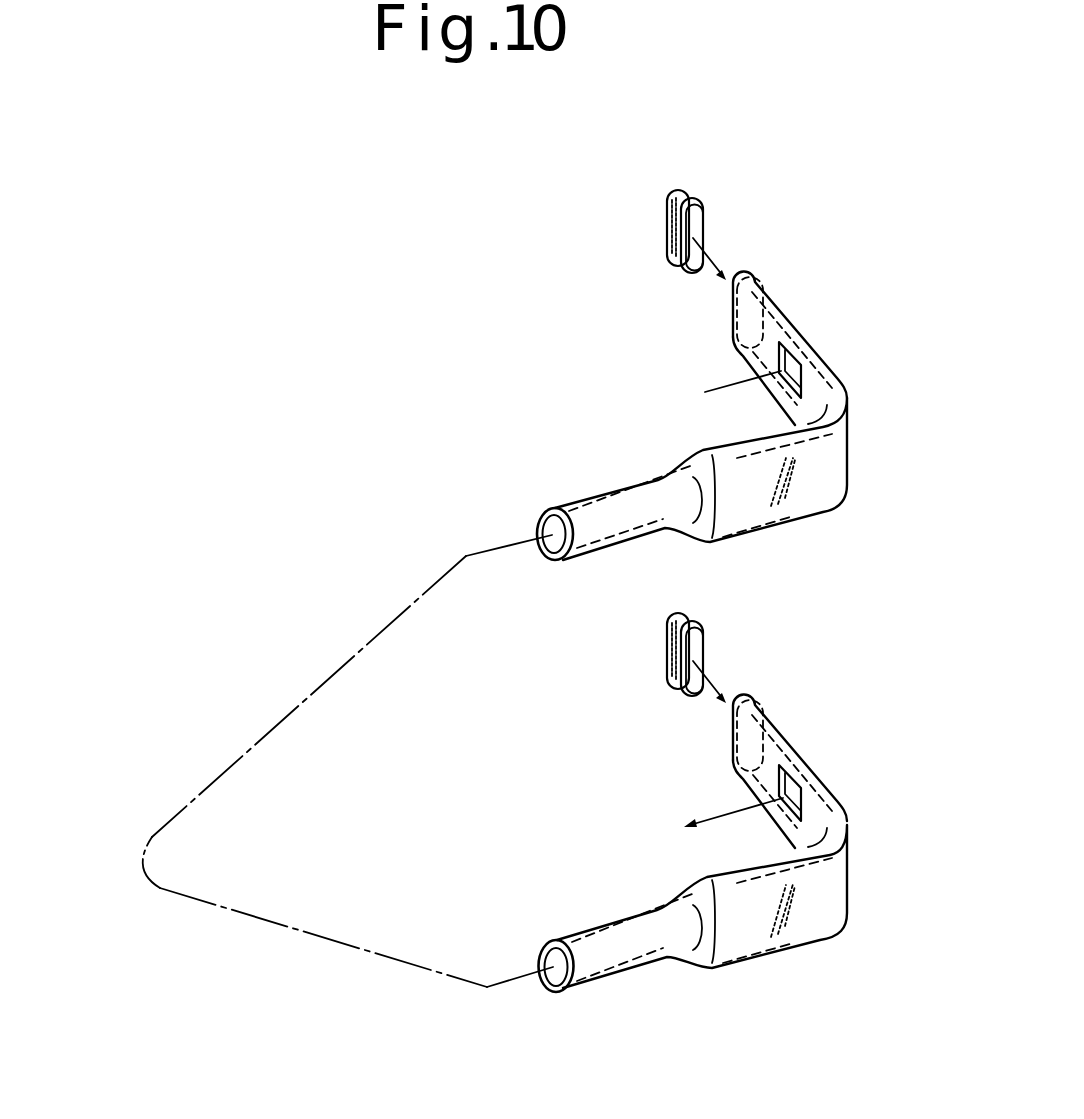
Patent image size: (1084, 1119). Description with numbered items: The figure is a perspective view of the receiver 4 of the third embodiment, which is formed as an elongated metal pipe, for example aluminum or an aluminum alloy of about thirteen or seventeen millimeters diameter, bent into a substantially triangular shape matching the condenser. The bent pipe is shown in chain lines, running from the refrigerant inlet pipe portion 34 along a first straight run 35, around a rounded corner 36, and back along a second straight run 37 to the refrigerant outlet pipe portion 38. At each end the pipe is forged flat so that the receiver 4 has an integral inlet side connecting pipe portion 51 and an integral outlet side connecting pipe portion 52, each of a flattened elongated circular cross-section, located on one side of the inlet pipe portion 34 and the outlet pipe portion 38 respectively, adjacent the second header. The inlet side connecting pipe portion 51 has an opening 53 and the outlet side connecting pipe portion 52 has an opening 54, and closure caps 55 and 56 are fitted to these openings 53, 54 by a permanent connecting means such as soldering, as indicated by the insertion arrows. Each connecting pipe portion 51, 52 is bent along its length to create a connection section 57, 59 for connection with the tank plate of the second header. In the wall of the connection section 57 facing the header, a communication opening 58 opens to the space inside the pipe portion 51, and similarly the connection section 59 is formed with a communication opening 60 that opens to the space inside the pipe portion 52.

The receiver 4 is at (790, 270).
The refrigerant inlet pipe portion 34 is at (466, 556).
The lead wire straight portion 35 is at (346, 662).
The lead wire bent portion 36 is at (162, 827).
The lead wire straight portion 37 is at (319, 931).
The refrigerant outlet pipe portion 38 is at (487, 989).
The inlet side connecting pipe portion 51 is at (825, 492).
The outlet side connecting pipe portion 52 is at (813, 928).
The opening 53 is at (740, 323).
The opening 54 is at (704, 735).
The closure cap 55 is at (672, 188).
The closure cap 56 is at (693, 626).
The connection section 57 is at (792, 411).
The communication opening 58 is at (784, 368).
The connection section 59 is at (765, 772).
The communication opening 60 is at (810, 758).